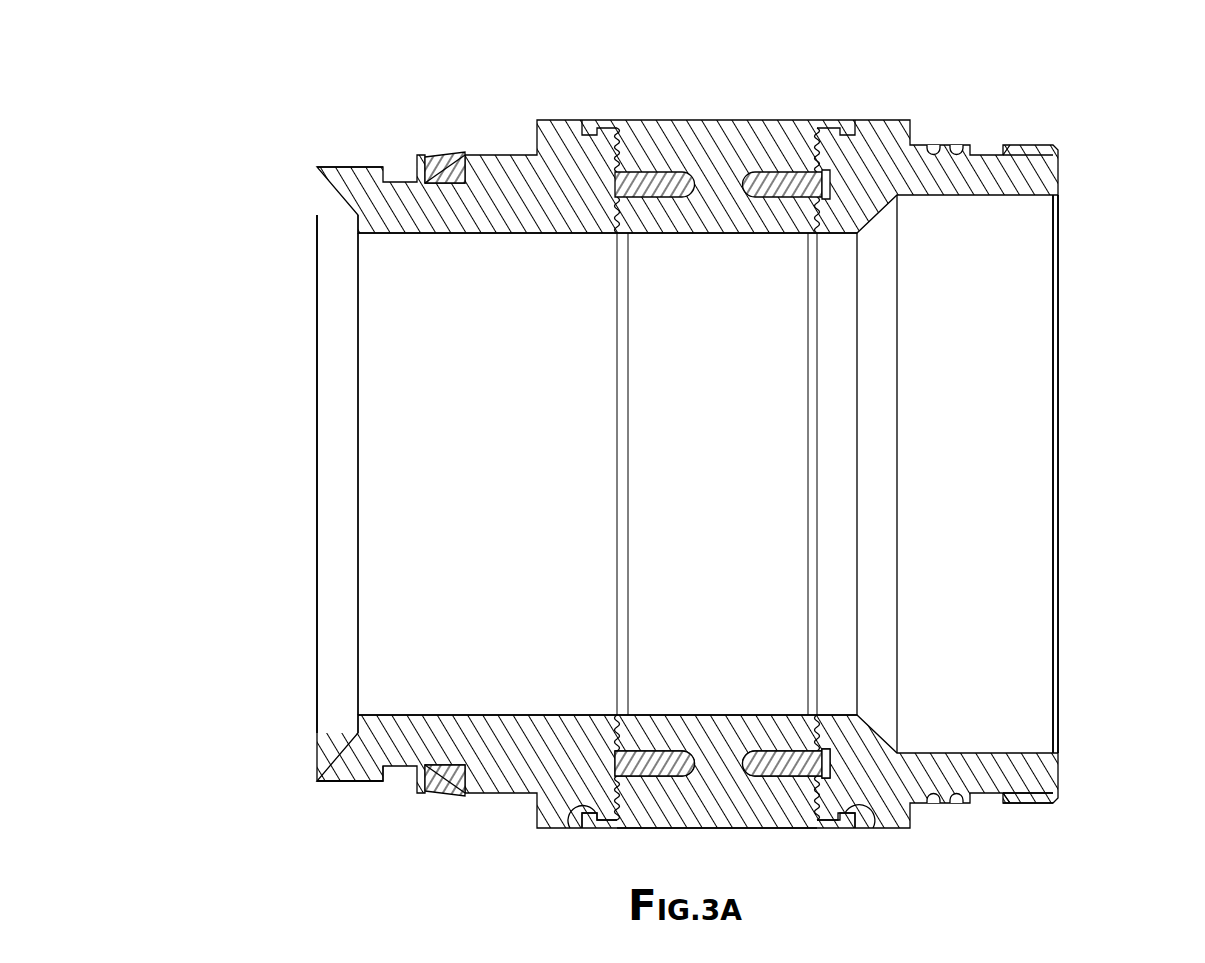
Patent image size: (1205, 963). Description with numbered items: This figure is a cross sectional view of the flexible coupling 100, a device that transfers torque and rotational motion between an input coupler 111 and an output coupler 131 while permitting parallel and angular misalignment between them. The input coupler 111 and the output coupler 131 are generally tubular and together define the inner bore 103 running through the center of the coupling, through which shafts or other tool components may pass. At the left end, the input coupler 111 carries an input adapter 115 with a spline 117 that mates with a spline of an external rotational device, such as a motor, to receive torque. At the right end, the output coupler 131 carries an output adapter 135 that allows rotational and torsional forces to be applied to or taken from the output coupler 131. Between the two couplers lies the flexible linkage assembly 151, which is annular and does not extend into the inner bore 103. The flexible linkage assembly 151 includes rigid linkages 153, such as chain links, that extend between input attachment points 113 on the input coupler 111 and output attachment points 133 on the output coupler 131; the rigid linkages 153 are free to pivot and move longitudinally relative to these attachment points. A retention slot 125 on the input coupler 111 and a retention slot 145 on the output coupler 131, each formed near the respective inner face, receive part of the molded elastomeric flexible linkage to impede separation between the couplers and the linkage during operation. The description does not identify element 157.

The flexible coupling 100 is at (226, 86).
The inner bore 103 is at (490, 500).
The input coupler 111 is at (335, 70).
The input attachment points 113 is at (650, 778).
The input adapter 115 is at (300, 676).
The spline 117 is at (350, 785).
The retention slot 125 is at (575, 826).
The output coupler 131 is at (832, 70).
The output attachment points 133 is at (773, 778).
The output adapter 135 is at (1082, 638).
The retention slot 145 is at (865, 803).
The flexible linkage assembly 151 is at (640, 70).
The rigid linkages 153 is at (697, 818).
The end seal 157 is at (1022, 803).